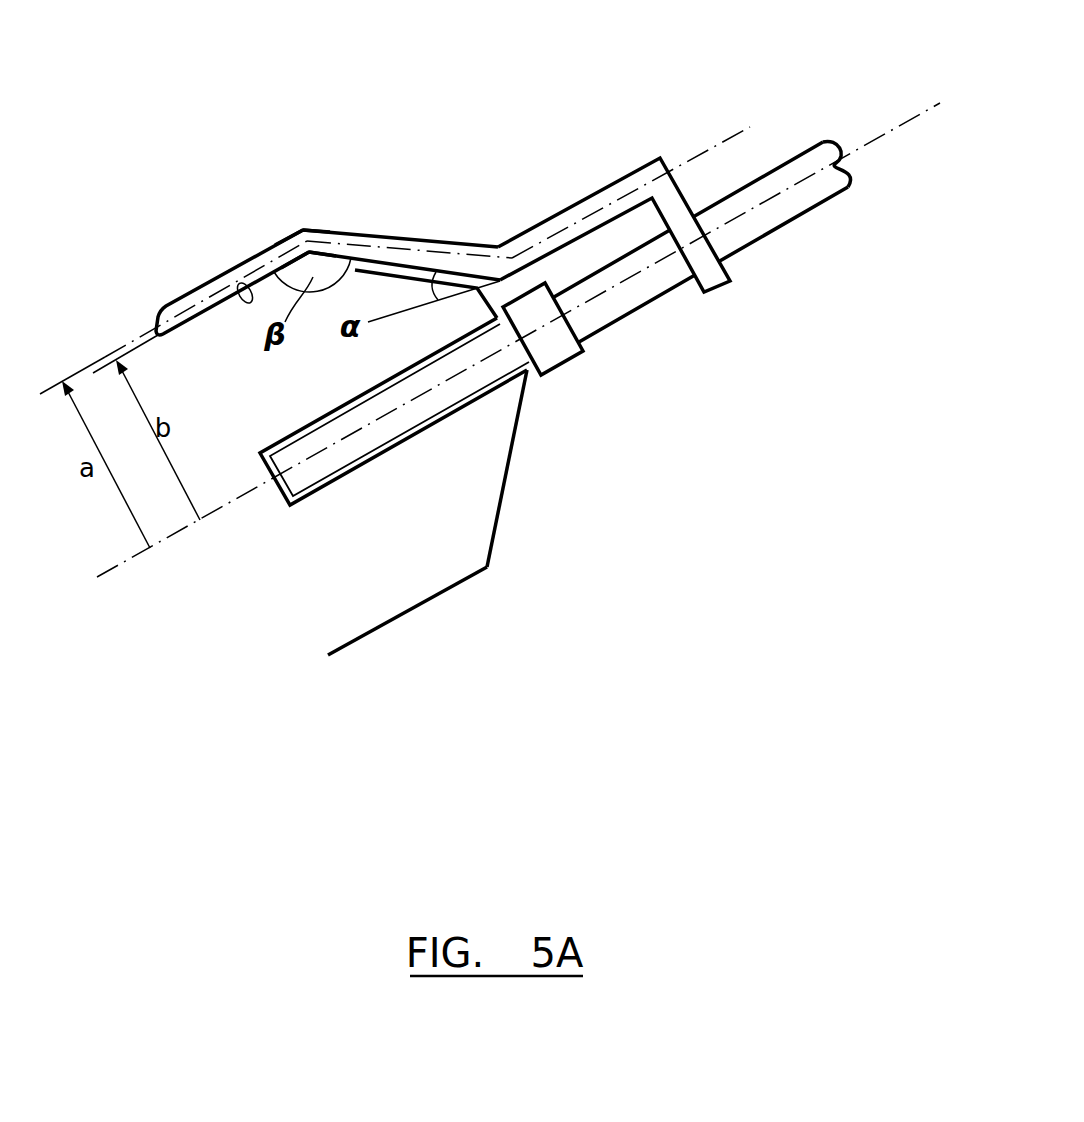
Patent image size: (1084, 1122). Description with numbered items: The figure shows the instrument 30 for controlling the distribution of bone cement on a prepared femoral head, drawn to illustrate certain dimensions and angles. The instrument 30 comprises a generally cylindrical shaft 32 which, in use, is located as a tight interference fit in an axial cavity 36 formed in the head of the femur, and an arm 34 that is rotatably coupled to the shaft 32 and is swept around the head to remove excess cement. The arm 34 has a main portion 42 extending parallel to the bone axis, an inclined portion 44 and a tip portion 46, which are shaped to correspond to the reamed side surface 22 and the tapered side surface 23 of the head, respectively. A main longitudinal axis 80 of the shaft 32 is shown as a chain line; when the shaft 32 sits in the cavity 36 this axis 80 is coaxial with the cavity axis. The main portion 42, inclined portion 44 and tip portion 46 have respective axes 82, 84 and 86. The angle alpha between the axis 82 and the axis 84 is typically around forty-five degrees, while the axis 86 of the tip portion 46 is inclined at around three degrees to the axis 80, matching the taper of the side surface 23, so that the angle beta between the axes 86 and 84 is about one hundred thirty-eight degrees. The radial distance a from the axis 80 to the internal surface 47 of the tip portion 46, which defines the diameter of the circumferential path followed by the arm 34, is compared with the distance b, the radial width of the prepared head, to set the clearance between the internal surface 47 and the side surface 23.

The side surface 22 is at (498, 518).
The side surface 23 is at (393, 622).
The instrument 30 is at (643, 322).
The shaft 32 is at (790, 221).
The arm 34 is at (291, 216).
The axial cavity 36 is at (462, 410).
The main portion 42 is at (617, 180).
The inclined portion 44 is at (431, 268).
The tip portion 46 is at (193, 290).
The internal surface 47 is at (240, 284).
The main longitudinal axis 80 is at (882, 136).
The main axis of main portion 82 is at (725, 127).
The main axis of inclined portion 84 is at (385, 248).
The main axis of tip portion 86 is at (137, 330).